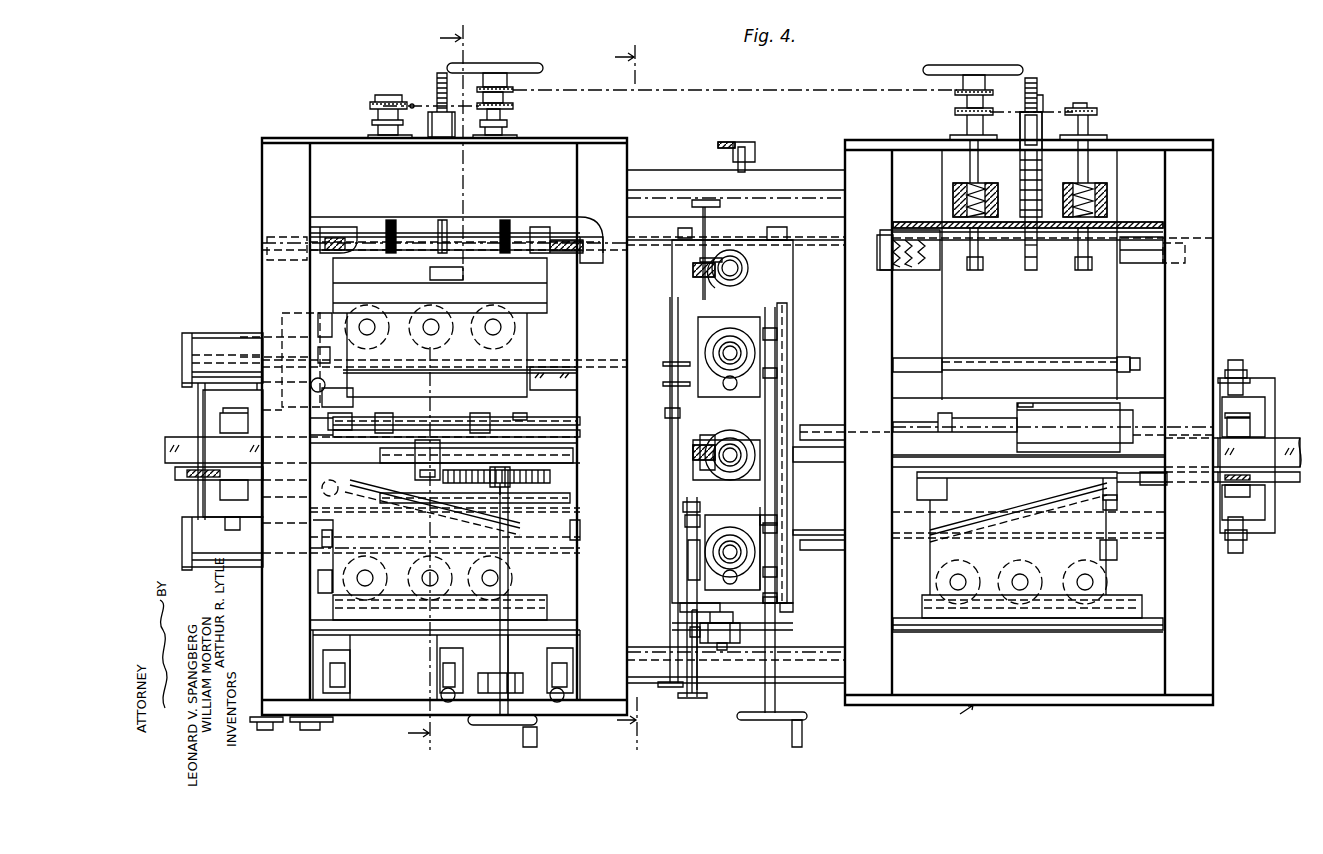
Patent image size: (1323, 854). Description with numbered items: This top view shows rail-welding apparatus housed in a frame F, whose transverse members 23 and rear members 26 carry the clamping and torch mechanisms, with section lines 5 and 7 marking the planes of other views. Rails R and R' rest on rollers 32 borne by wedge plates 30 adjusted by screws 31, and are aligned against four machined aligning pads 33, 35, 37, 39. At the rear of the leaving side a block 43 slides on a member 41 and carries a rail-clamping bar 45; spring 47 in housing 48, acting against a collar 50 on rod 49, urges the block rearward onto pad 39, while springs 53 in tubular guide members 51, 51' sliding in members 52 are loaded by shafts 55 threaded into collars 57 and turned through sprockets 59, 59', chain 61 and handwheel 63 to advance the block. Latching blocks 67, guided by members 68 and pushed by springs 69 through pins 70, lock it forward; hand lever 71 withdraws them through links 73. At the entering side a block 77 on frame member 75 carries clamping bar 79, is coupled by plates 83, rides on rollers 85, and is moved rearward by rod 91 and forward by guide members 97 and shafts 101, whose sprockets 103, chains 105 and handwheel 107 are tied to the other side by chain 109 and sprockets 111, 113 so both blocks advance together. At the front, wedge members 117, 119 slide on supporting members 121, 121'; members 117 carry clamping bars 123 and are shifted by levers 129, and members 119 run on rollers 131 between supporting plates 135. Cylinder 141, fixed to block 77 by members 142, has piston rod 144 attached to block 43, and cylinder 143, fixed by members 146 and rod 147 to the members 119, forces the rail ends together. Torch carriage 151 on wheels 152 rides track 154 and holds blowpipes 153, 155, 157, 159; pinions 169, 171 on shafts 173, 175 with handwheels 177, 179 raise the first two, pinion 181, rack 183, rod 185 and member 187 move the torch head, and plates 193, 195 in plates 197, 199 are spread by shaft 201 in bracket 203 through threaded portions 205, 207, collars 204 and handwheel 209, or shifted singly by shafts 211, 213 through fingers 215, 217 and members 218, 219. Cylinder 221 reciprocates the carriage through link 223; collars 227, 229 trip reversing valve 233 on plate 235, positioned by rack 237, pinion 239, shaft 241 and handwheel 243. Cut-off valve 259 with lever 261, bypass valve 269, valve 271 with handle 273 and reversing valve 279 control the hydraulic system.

The section line 5- 5 is at (433, 386).
The section line 7- 7 is at (625, 393).
The transverse member 23 is at (297, 140).
The frame member 26 is at (336, 148).
The wedge-shaped plate 30 is at (205, 498).
The screw 31 is at (228, 528).
The roller 32 is at (222, 420).
The aligning pad 33 is at (1140, 222).
The aligning pad 35 is at (322, 217).
The aligning pad 37 is at (555, 620).
The aligning pad 39 is at (908, 626).
The member 41 is at (1137, 367).
The apertured metal block 43 is at (1117, 302).
The rail-clamping bar 45 is at (966, 420).
The compression spring 47 is at (1040, 185).
The housing 48 is at (432, 128).
The rod 49 is at (1025, 248).
The collar 50 is at (1020, 132).
The tubular guide member 51 is at (964, 256).
The tubular guide member 51' is at (1067, 256).
The member 52 is at (953, 200).
The compression spring 53 is at (972, 190).
The shaft 55 is at (1090, 136).
The collar 57 is at (967, 128).
The sprocket wheel 59 is at (961, 124).
The sprocket wheel 59' is at (1108, 135).
The chain 61 is at (1043, 116).
The handwheel 63 is at (1003, 72).
The latching block 67 is at (539, 228).
The member 68 is at (310, 230).
The compression spring 69 is at (895, 268).
The pin 70 is at (302, 255).
The hand lever 71 is at (728, 142).
The link 73 is at (810, 240).
The frame member 75 is at (549, 378).
The apertured metal block 77 is at (320, 346).
The rail-clamping bar 79 is at (530, 435).
The plate 83 is at (330, 284).
The roller 85 is at (403, 342).
The rod 91 is at (441, 230).
The tubular guide member 97 is at (387, 230).
The shaft 101 is at (380, 136).
The sprocket 103 is at (376, 104).
The chain 105 is at (414, 104).
The handwheel 107 is at (522, 64).
The chain 109 is at (606, 90).
The sprocket 111 is at (955, 93).
The sprocket 113 is at (477, 76).
The pressure-transmitting wedge member 117 is at (322, 488).
The pressure-transmitting wedge member 119 is at (405, 580).
The supporting member 121 is at (843, 534).
The supporting member 121' is at (1119, 518).
The rail-clamping bar 123 is at (917, 475).
The lever 129 is at (190, 480).
The roller 131 is at (440, 558).
The flanged supporting plate 135 is at (525, 625).
The fluid-pressure operated cylinder 141 is at (225, 343).
The member 142 is at (333, 322).
The fluid-pressure operated cylinder 143 is at (182, 545).
The piston rod 144 is at (840, 362).
The member 146 is at (322, 580).
The rod 147 is at (815, 550).
The torch carriage 151 is at (793, 265).
The wheel 152 is at (782, 227).
The blowpipe 153 is at (744, 265).
The track 154 is at (662, 225).
The blowpipe 155 is at (745, 435).
The blowpipe 157 is at (728, 360).
The blowpipe 159 is at (748, 515).
The pinion 169 is at (693, 270).
The pinion 171 is at (693, 452).
The shaft 173 is at (705, 260).
The shaft 175 is at (700, 470).
The handwheel 177 is at (703, 200).
The handwheel 179 is at (706, 686).
The pinion 181 is at (690, 632).
The rack 183 is at (713, 619).
The rod 185 is at (724, 648).
The member 187 is at (742, 632).
The plate 193 is at (750, 332).
The plate 195 is at (775, 540).
The plate 197 is at (710, 318).
The plate 199 is at (777, 494).
The shaft 201 is at (787, 458).
The bracket 203 is at (786, 613).
The collar 204 is at (780, 598).
The threaded portion 205 is at (783, 340).
The threaded portion 207 is at (845, 535).
The handwheel 209 is at (785, 720).
The shaft 211 is at (672, 388).
The shaft 213 is at (688, 592).
The finger 215 is at (668, 362).
The finger 217 is at (690, 552).
The member 218 is at (665, 414).
The member 219 is at (680, 512).
The fluid-pressure operated cylinder 221 is at (1068, 405).
The link 223 is at (830, 426).
The collar 227 is at (375, 432).
The collar 229 is at (468, 417).
The hydraulic pressure-reversing valve 233 is at (437, 442).
The plate 235 is at (573, 456).
The rack 237 is at (555, 477).
The pinion 239 is at (518, 470).
The shaft 241 is at (500, 645).
The handwheel 243 is at (520, 726).
The cut-off valve 259 is at (440, 668).
The lever 261 is at (448, 702).
The delayed-action bypass valve 269 is at (352, 420).
The valve 271 is at (573, 665).
The handle 273 is at (557, 702).
The reversing valve 279 is at (325, 670).
The rail R is at (1260, 444).
The rail R' is at (201, 463).
The frame F is at (960, 717).